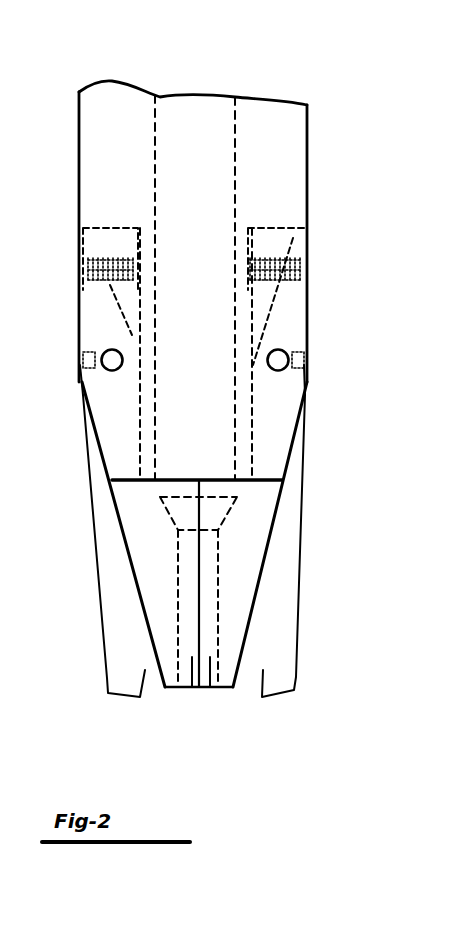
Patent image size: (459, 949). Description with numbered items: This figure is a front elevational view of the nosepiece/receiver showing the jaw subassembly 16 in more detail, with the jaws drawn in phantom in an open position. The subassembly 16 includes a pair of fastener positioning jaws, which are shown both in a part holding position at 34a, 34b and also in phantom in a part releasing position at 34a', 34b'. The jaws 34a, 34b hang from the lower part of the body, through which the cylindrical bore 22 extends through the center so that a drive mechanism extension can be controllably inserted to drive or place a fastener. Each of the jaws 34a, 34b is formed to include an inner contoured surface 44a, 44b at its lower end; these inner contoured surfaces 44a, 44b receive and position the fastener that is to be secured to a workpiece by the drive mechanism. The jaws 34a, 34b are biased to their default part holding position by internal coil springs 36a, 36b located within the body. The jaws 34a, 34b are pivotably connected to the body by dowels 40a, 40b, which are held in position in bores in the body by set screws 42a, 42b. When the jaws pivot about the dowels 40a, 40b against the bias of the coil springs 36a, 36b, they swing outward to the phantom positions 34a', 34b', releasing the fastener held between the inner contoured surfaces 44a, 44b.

The nosepiece/receiver jaw subassembly 16 is at (324, 119).
The cylindrical bore 22 is at (177, 108).
The internal coil spring 36a is at (88, 250).
The internal coil spring 36b is at (306, 267).
The dowel 40a is at (112, 360).
The dowel 40b is at (278, 360).
The set screw 42a is at (80, 364).
The set screw 42b is at (304, 345).
The fastener positioning jaw 34a is at (125, 568).
The fastener positioning jaw 34b is at (267, 578).
The fastener positioning jaw in part releasing position 34a' is at (100, 563).
The fastener positioning jaw in part releasing position 34b' is at (301, 563).
The inner contoured surface 44a is at (191, 658).
The inner contoured surface 44b is at (208, 663).